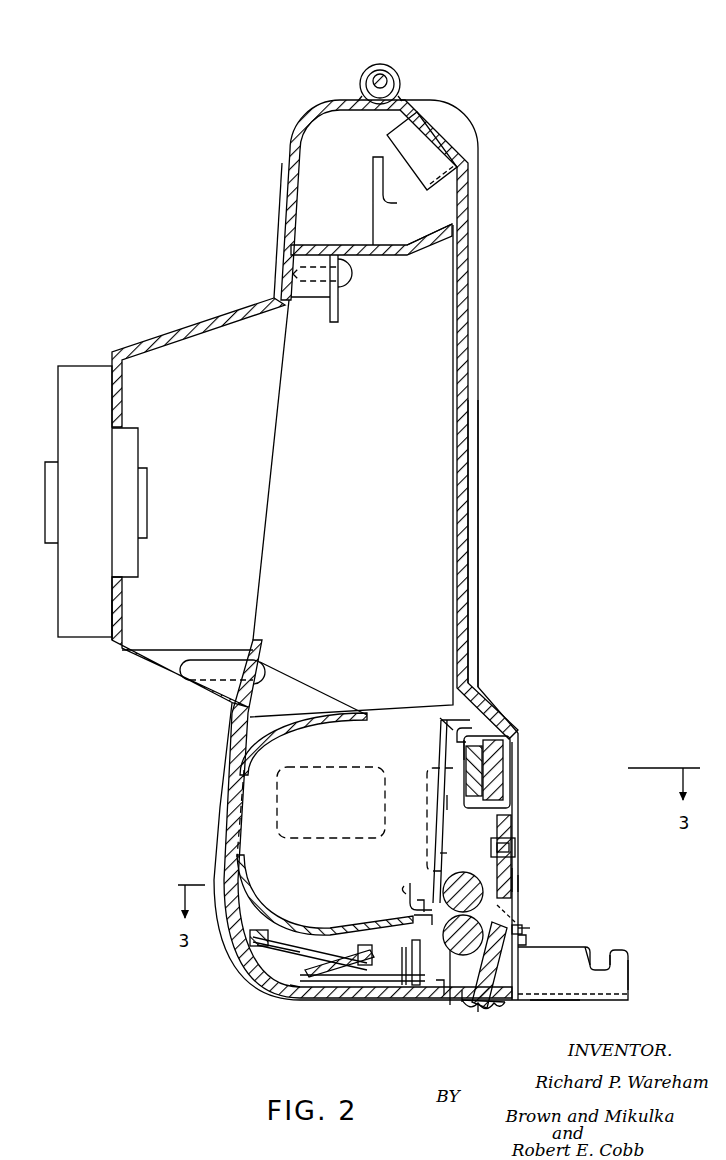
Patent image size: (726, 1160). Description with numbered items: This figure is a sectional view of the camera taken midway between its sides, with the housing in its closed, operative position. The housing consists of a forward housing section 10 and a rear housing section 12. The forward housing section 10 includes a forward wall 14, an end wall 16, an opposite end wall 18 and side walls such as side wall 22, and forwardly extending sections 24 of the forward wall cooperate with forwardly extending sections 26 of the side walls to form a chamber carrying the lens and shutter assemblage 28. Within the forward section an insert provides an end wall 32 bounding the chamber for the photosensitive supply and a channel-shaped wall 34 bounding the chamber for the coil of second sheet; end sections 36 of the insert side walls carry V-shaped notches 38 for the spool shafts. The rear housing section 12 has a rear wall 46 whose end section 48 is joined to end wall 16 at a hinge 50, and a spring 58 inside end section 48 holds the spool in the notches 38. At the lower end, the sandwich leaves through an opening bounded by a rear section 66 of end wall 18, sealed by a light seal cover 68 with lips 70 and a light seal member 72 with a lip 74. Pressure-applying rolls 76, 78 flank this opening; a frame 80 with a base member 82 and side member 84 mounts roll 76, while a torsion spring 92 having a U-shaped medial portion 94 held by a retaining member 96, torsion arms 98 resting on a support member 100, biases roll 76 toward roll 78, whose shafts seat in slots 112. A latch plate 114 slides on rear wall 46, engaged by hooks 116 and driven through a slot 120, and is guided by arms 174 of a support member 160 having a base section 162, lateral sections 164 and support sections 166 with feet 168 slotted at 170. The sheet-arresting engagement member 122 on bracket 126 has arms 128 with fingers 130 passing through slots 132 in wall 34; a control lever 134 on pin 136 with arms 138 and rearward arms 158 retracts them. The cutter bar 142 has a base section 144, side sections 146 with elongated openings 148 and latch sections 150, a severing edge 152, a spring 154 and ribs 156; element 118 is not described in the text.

The forward housing section 10 is at (150, 709).
The rear housing section 12 is at (515, 649).
The forward wall 14 is at (271, 204).
The end wall 16 is at (327, 103).
The end wall 18 is at (348, 995).
The side wall 22 is at (322, 214).
The forwardly extending section 24 is at (163, 330).
The forwardly extending section 26 is at (197, 511).
The lens and shutter assemblage 28 is at (80, 570).
The end wall 32 is at (355, 531).
The channel-shaped wall 34 is at (283, 725).
The end section 36 is at (400, 224).
The V-shaped notch 38 is at (390, 201).
The rear wall 46 is at (478, 584).
The end section 48 is at (389, 134).
The hinge 50 is at (387, 80).
The spring 58 is at (435, 165).
The rear section 66 is at (507, 1008).
The light seal cover 68 is at (525, 883).
The lips 70 is at (500, 905).
The light seal member 72 is at (527, 940).
The lip 74 is at (510, 917).
The roll 76 is at (467, 1005).
The roll 78 is at (528, 881).
The frame 80 is at (250, 934).
The base member 82 is at (295, 988).
The side member 84 is at (410, 763).
The torsion spring 92 is at (270, 977).
The U-shaped medial portion 94 is at (257, 946).
The retaining member 96 is at (265, 923).
The torsion arms 98 is at (367, 966).
The support member 100 is at (337, 972).
The slot 112 is at (423, 884).
The latch plate 114 is at (478, 748).
The hook 116 is at (508, 770).
The block 118 is at (503, 775).
The slot 120 is at (483, 760).
The engagement member 122 is at (418, 985).
The bracket 126 is at (403, 985).
The arms 128 is at (450, 1008).
The fingers 130 is at (430, 907).
The slots 132 is at (417, 920).
The control lever 134 is at (530, 929).
The pin 136 is at (507, 1003).
The arms 138 is at (440, 995).
The cutter bar 142 is at (610, 1005).
The base section 144 is at (613, 982).
The side sections 146 is at (545, 973).
The elongated openings 148 is at (492, 1012).
The latch sections 150 is at (617, 960).
The edge 152 is at (628, 995).
The spring 154 is at (550, 999).
The ribs 156 is at (483, 1013).
The arms 158 is at (518, 930).
The support member 160 is at (517, 848).
The base section 162 is at (511, 833).
The lateral sections 164 is at (452, 853).
The support sections 166 is at (447, 802).
The foot 168 is at (420, 886).
The slot 170 is at (411, 902).
The arms 174 is at (478, 715).